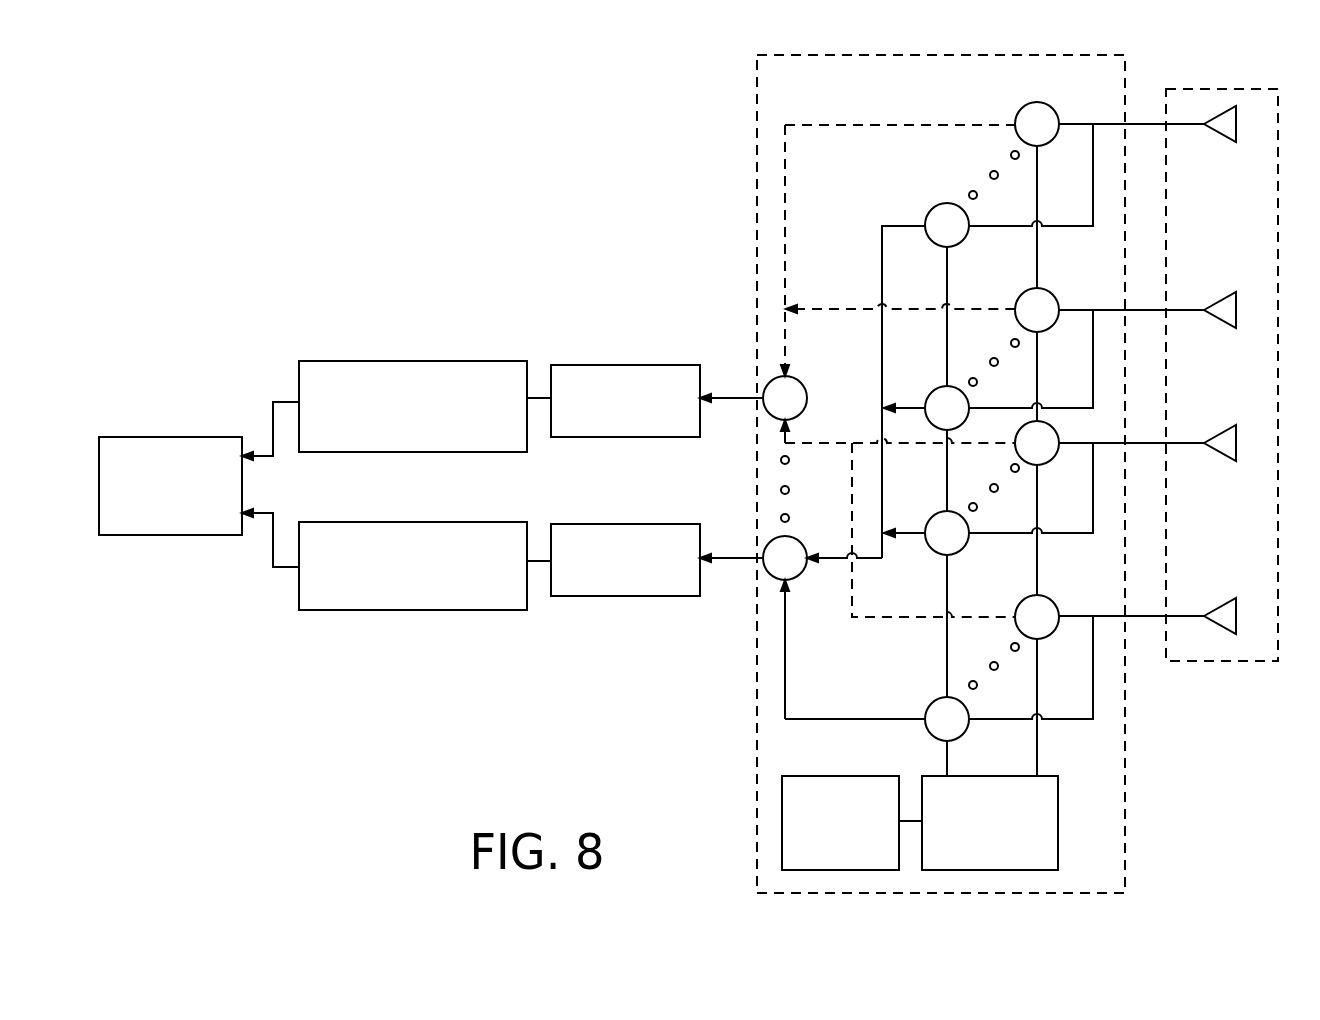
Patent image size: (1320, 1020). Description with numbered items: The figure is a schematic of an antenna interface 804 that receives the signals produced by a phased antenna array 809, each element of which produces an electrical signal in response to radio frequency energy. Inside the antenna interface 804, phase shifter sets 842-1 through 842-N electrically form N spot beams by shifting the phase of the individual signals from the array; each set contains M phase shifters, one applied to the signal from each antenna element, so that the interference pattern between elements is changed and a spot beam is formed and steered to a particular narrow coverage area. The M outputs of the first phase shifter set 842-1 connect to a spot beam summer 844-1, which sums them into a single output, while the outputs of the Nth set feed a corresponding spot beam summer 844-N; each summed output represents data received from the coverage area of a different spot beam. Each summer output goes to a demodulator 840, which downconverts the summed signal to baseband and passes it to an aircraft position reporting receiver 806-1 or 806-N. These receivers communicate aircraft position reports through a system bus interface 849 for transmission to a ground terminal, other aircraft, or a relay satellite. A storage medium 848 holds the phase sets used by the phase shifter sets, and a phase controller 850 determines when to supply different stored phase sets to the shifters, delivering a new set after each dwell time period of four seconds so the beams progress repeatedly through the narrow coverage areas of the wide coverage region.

The antenna interface 804 is at (1125, 849).
The phased antenna array 809 is at (1253, 661).
The phase shifter set 842-1 is at (1055, 108).
The phase shifter set 842-N is at (931, 210).
The spot beam summer 844-1 is at (803, 388).
The spot beam summer 844-N is at (800, 576).
The demodulator 840 is at (610, 423).
The aircraft position reporting receiver 806-1 is at (387, 443).
The aircraft position reporting receiver 806-N is at (387, 604).
The system bus interface 849 is at (152, 523).
The storage medium 848 is at (820, 859).
The phase controller 850 is at (970, 859).